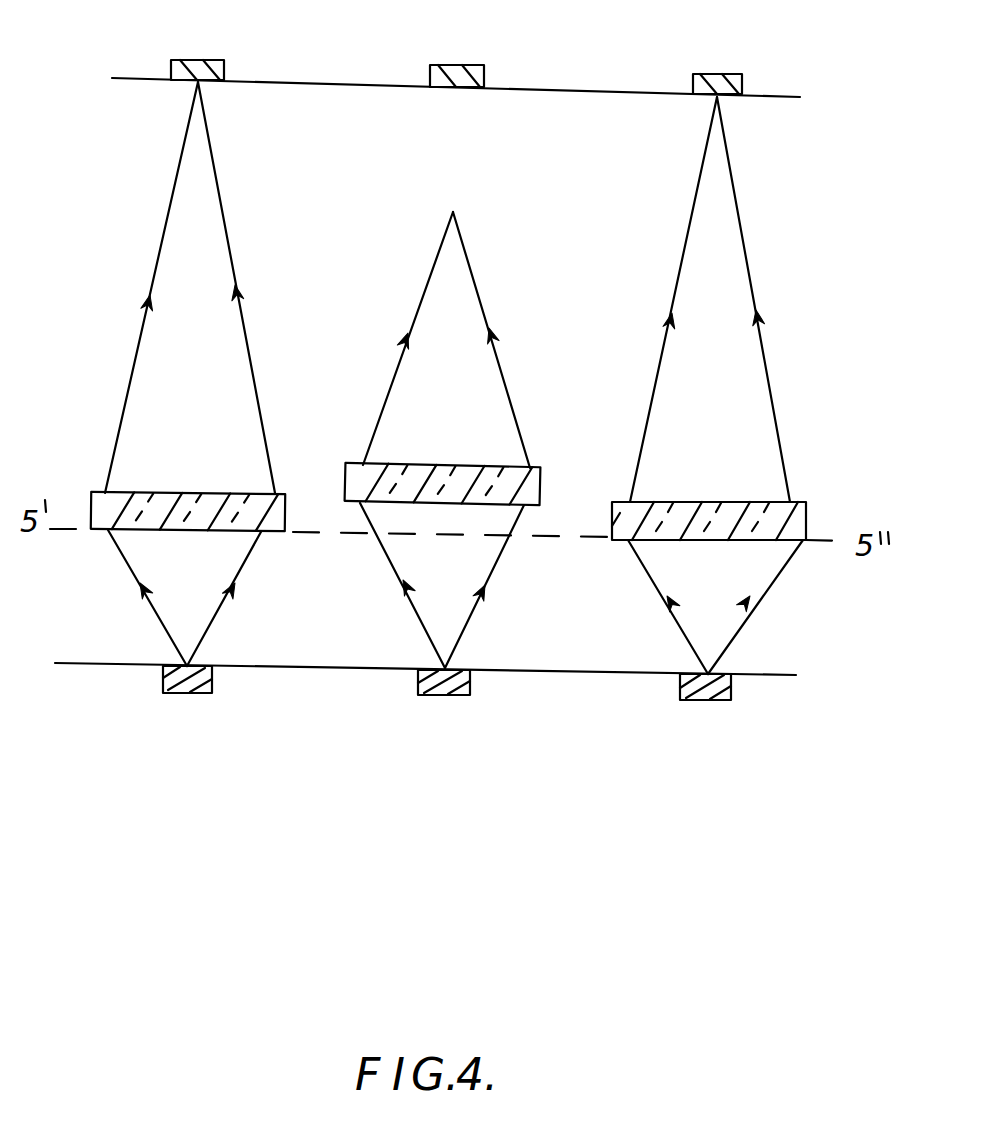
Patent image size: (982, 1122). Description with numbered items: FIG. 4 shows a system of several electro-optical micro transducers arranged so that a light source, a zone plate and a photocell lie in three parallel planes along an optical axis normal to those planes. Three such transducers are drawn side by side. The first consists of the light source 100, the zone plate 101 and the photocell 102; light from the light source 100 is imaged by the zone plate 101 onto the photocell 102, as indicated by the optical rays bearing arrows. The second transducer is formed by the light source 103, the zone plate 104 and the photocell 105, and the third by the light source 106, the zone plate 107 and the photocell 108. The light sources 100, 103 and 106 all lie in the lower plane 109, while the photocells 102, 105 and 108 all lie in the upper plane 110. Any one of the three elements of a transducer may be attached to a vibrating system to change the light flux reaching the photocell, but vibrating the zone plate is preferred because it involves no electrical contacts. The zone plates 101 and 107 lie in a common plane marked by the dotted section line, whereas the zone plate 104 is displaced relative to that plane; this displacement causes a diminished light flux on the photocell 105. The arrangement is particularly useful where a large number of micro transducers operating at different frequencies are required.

The light source 100 is at (178, 693).
The zone plate 101 is at (180, 493).
The photocell 102 is at (213, 60).
The light source 103 is at (440, 695).
The zone plate 104 is at (434, 465).
The photocell 105 is at (470, 65).
The light source 106 is at (700, 700).
The zone plate 107 is at (693, 502).
The photocell 108 is at (730, 74).
The plane 109 is at (457, 679).
The plane 110 is at (490, 96).